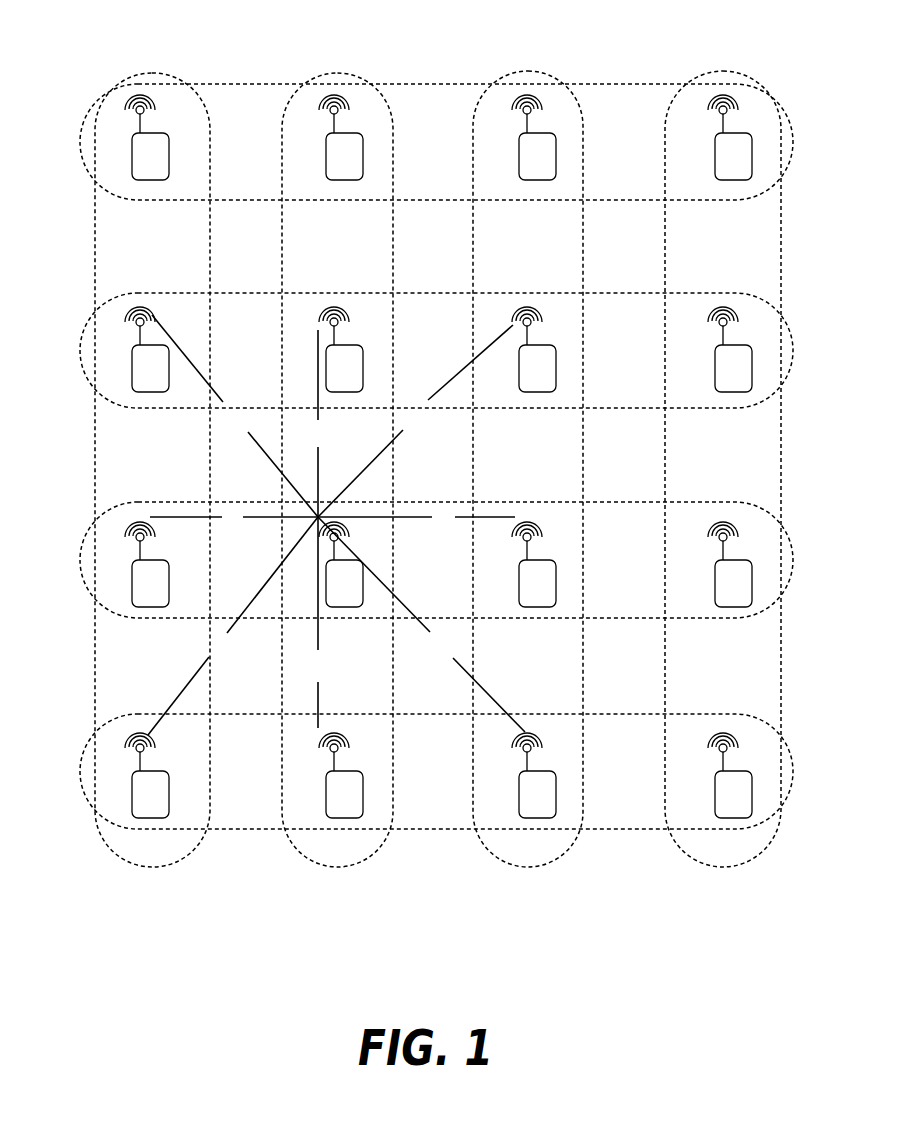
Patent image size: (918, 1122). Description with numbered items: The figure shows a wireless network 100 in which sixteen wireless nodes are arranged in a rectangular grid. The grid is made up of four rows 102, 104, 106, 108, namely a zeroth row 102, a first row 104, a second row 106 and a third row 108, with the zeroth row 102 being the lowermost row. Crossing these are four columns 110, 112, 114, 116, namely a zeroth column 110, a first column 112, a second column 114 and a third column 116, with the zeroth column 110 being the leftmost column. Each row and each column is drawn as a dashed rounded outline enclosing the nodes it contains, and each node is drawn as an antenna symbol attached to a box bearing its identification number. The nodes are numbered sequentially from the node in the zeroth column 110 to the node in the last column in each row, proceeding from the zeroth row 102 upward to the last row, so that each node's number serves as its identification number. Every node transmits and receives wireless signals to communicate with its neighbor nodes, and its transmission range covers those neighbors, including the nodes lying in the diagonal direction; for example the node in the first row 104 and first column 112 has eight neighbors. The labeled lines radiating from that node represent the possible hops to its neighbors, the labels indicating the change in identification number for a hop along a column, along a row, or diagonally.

The wireless network 100 is at (484, 933).
The zeroth row 102 is at (87, 748).
The first row 104 is at (82, 558).
The second row 106 is at (82, 342).
The third row 108 is at (82, 130).
The zeroth column 110 is at (162, 75).
The first column 112 is at (340, 75).
The second column 114 is at (528, 70).
The third column 116 is at (730, 71).